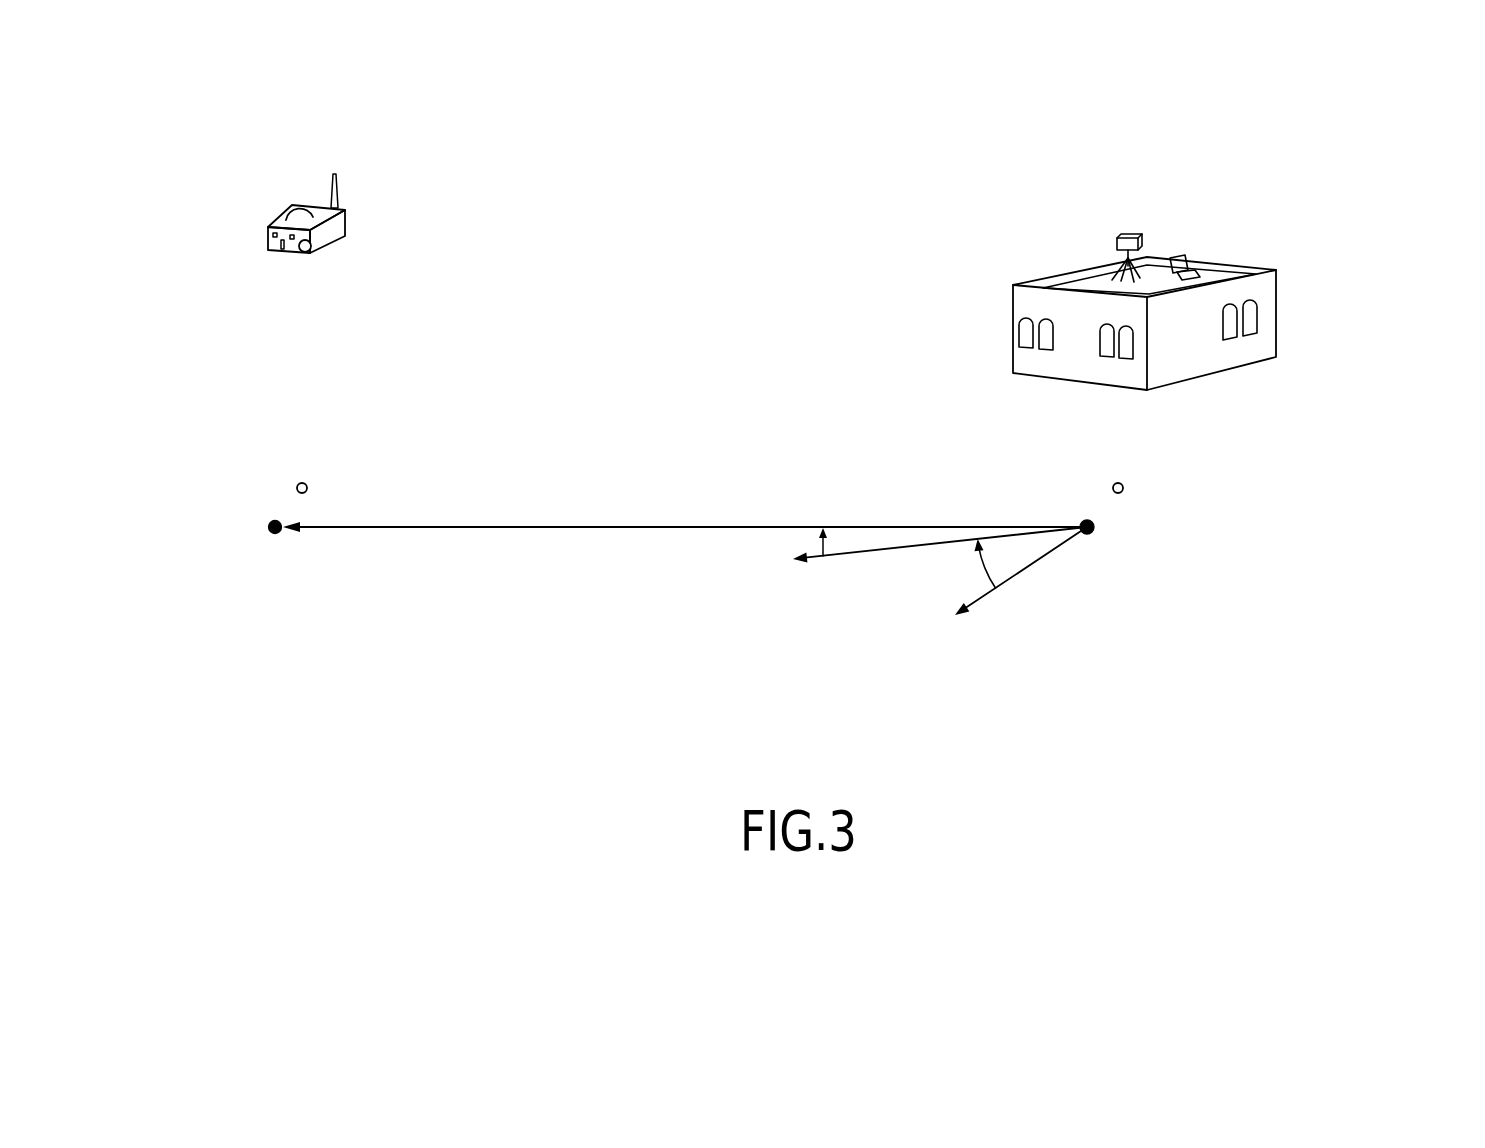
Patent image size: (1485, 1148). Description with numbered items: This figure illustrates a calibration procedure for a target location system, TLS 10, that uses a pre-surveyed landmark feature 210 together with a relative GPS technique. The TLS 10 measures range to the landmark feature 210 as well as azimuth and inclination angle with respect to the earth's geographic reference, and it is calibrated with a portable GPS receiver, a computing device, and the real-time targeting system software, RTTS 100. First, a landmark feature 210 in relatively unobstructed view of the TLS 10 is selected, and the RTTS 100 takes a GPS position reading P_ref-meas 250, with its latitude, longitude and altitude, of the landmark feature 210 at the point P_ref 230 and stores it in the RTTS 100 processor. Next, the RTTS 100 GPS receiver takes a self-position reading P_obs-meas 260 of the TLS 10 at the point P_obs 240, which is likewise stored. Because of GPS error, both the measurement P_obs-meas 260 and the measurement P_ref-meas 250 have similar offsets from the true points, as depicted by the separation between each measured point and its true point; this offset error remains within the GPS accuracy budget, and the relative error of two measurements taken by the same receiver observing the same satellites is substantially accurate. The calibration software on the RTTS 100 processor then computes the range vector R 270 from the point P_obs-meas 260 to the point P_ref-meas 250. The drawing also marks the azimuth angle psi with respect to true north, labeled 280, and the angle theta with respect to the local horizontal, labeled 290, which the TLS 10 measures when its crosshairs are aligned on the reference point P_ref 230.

The TLS 10 is at (1172, 290).
The RTTS 100 is at (1187, 260).
The landmark feature 210 is at (257, 246).
The point P_ref 230 is at (310, 249).
The point P_obs 240 is at (1123, 485).
The GPS position reading P_ref-meas 250 is at (270, 525).
The TLS self-position reading P_obs-meas 260 is at (1081, 520).
The range vector R 270 is at (600, 541).
The azimuth angle psi to true north 280 is at (952, 575).
The elevation angle theta from local horizontal 290 is at (767, 550).